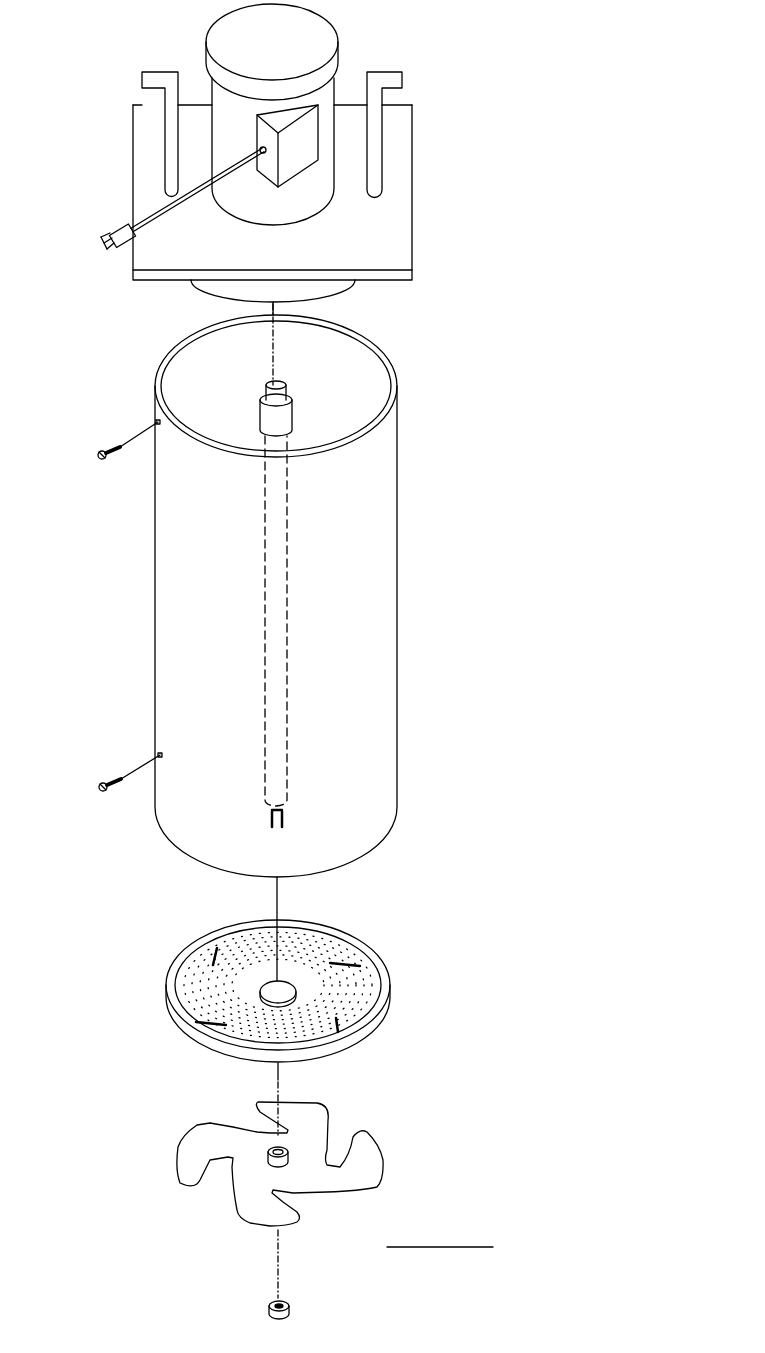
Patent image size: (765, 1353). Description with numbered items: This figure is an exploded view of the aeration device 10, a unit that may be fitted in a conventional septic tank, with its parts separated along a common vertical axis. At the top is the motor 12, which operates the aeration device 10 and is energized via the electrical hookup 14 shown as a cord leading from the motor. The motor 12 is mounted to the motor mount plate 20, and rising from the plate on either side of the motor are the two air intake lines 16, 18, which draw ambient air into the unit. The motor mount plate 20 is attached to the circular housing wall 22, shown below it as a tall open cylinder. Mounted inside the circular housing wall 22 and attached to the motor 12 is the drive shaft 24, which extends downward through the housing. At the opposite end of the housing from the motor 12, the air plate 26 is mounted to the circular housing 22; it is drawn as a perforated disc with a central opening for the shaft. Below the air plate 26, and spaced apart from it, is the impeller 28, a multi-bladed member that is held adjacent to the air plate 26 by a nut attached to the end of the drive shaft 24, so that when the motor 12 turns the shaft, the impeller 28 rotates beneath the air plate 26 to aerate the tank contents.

The aeration device 10 is at (473, 440).
The motor 12 is at (317, 44).
The electrical hookup 14 is at (118, 225).
The air intake line 16 is at (402, 72).
The air intake line 18 is at (142, 72).
The motor mount plate 20 is at (145, 138).
The circular housing wall 22 is at (397, 640).
The drive shaft 24 is at (287, 737).
The air plate 26 is at (385, 975).
The impeller 28 is at (370, 1147).